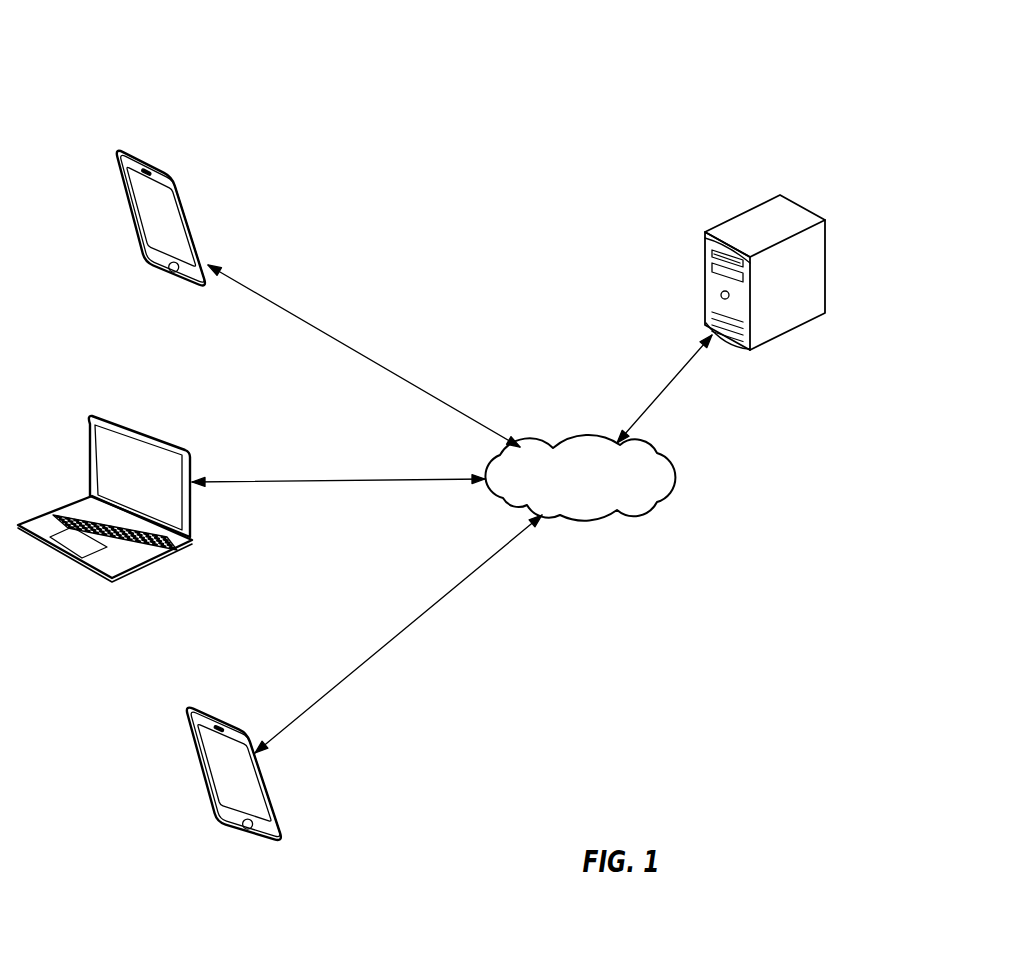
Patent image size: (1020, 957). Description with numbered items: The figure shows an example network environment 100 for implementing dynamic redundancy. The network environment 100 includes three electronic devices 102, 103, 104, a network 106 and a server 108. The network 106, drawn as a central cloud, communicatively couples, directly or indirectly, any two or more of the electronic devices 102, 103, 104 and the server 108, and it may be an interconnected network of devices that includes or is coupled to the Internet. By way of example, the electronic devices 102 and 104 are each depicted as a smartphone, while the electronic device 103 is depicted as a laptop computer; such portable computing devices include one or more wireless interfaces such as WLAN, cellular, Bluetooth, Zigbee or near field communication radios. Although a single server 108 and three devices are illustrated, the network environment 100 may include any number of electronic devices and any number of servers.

The network environment 100 is at (178, 66).
The electronic device 102 is at (228, 833).
The electronic device 103 is at (110, 580).
The electronic device 104 is at (170, 284).
The network 106 is at (617, 517).
The server 108 is at (706, 231).